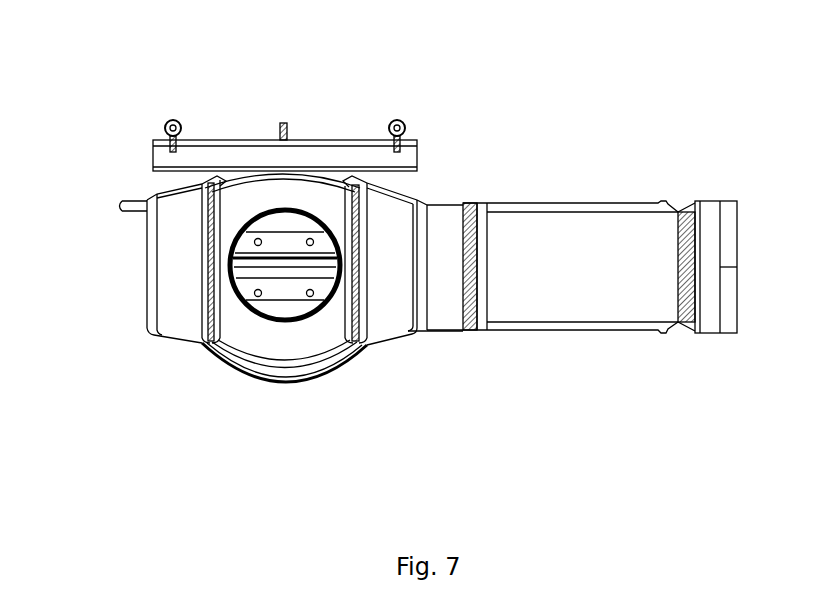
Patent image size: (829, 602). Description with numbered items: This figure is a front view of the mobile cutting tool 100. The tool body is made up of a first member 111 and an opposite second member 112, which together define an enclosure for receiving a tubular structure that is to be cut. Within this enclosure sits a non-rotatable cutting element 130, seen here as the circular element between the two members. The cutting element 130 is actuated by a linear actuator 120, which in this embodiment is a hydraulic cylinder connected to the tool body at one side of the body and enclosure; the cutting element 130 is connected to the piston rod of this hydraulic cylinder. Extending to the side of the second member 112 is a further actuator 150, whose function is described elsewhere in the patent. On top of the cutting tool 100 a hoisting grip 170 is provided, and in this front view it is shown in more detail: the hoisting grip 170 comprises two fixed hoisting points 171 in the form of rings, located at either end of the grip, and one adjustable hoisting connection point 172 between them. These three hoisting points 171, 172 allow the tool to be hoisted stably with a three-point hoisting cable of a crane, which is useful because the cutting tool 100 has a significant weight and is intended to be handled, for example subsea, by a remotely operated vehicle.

The mobile cutting tool 100 is at (123, 93).
The first member 111 is at (175, 323).
The second member 112 is at (393, 328).
The actuator 120 is at (246, 366).
The cutting element 130 is at (284, 270).
The further actuator 150 is at (582, 268).
The hoisting grip 170 is at (405, 158).
The fixed hoisting points 171 is at (173, 120).
The adjustable hoisting connection point 172 is at (298, 160).